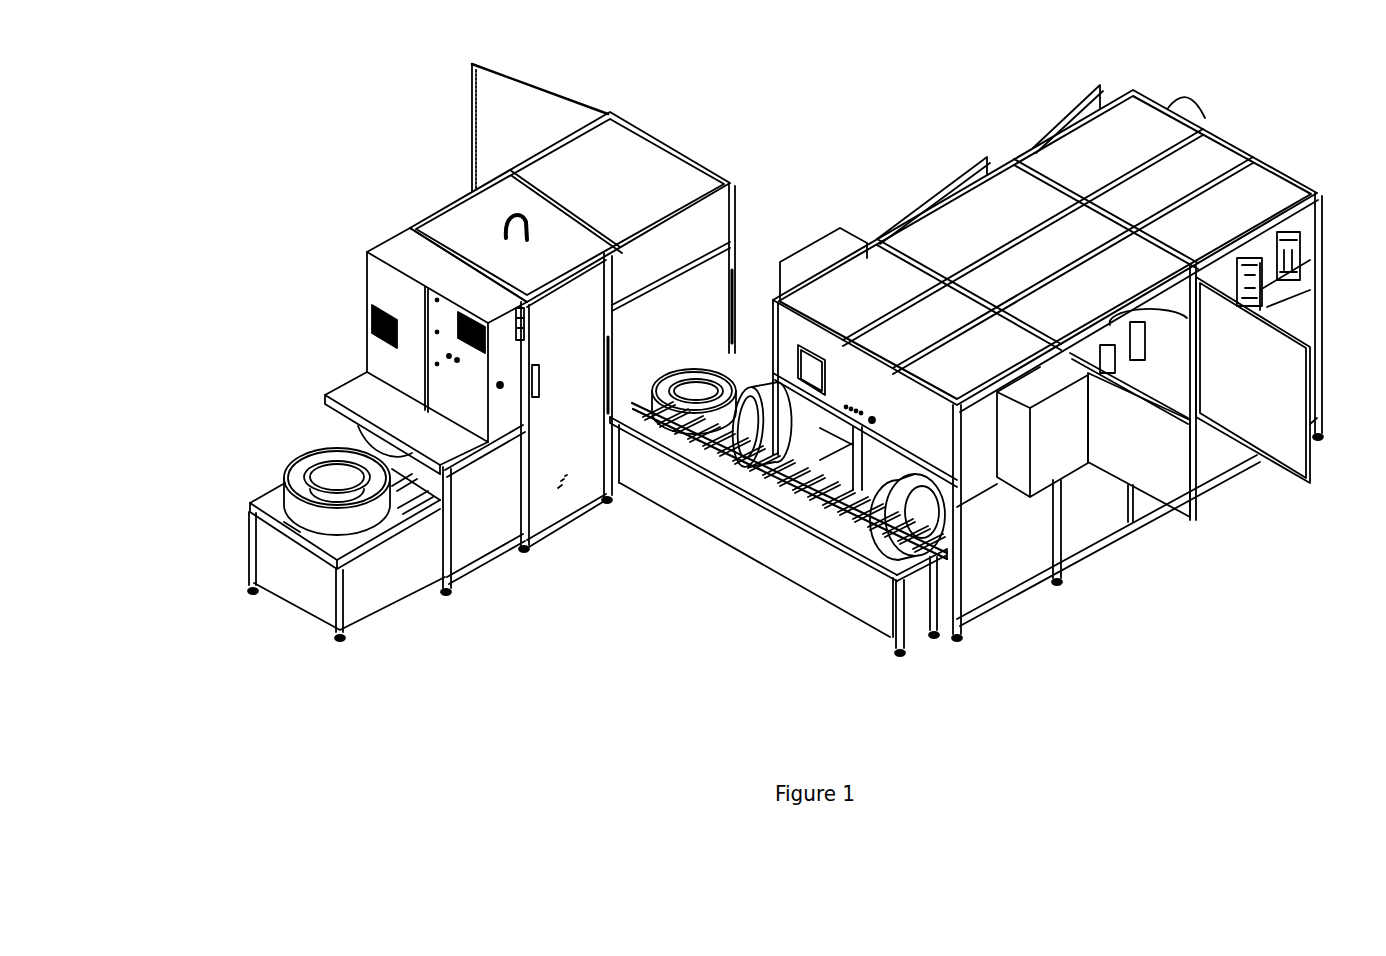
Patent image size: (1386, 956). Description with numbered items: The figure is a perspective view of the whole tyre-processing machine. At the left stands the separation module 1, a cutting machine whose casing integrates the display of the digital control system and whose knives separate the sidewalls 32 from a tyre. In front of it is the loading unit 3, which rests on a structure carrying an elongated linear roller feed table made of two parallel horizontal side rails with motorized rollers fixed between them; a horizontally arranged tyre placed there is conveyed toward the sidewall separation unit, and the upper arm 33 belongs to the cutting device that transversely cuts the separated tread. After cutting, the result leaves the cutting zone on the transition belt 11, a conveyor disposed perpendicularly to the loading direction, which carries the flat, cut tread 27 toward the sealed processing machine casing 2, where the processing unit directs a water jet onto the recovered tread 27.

The separation module 1 is at (635, 162).
The sealed processing machine casing 2 is at (1275, 193).
The loading unit 3 is at (313, 542).
The transition belt 11 is at (642, 422).
The tread 27 is at (900, 497).
The sidewalls 32 is at (300, 468).
The upper arm 33 is at (373, 513).